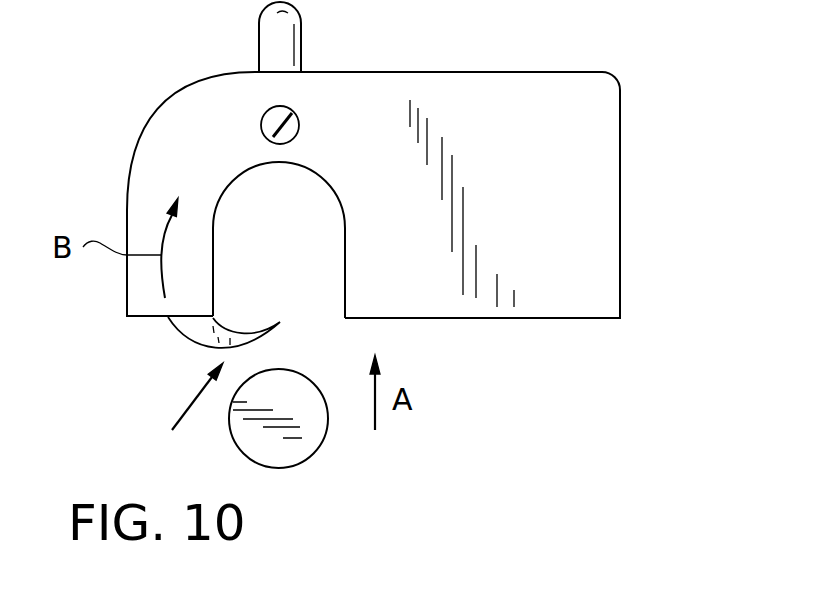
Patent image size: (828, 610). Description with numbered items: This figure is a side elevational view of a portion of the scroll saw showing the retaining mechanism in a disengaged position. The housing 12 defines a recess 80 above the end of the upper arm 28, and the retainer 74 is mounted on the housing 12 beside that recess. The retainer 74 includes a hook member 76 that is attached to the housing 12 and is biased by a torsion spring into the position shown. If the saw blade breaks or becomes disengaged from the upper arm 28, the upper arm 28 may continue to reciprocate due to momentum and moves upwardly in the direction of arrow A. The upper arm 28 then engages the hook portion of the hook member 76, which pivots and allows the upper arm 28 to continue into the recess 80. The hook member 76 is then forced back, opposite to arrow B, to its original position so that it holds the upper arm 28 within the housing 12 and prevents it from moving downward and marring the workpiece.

The housing 12 is at (607, 165).
The upper arm 28 is at (316, 440).
The retainer 74 is at (177, 408).
The hook member 76 is at (217, 337).
The recess 80 is at (302, 183).